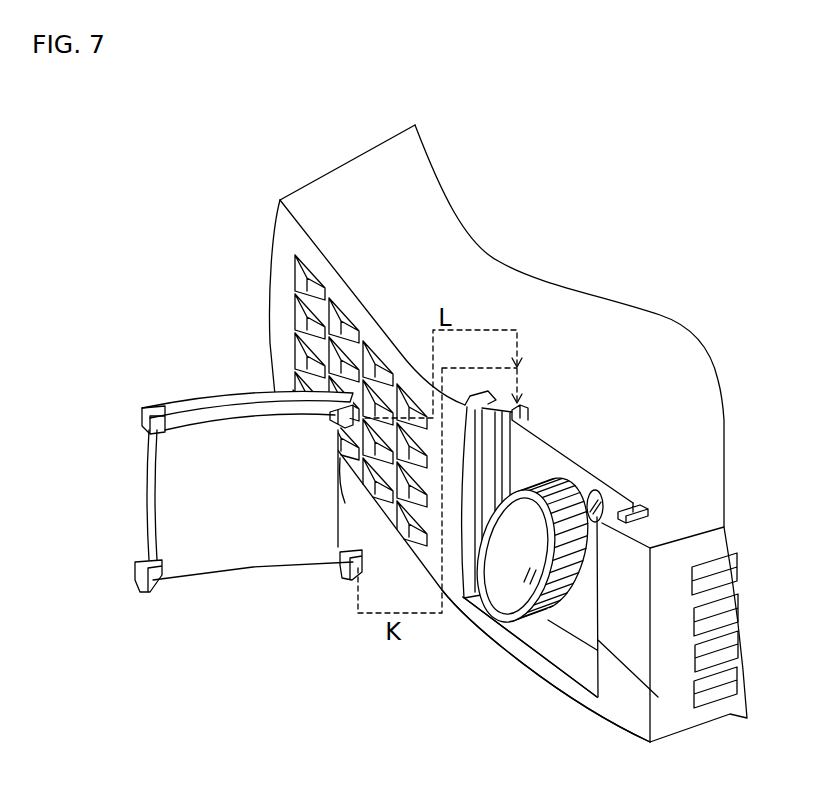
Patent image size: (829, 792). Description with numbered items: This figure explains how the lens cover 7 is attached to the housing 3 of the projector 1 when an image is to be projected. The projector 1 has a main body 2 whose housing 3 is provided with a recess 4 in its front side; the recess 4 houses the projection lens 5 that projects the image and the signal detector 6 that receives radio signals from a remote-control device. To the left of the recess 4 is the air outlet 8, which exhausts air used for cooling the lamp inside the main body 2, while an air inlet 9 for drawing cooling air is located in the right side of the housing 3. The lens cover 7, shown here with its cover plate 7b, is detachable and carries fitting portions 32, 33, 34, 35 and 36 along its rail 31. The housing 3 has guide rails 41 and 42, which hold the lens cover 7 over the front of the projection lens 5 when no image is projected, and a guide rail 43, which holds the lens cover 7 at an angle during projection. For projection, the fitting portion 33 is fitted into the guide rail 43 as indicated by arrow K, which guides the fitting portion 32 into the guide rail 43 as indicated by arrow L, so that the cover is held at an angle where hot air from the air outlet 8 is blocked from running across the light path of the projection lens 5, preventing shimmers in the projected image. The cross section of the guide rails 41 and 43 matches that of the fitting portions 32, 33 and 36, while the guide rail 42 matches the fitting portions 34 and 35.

The projector 1 is at (575, 84).
The main body 2 is at (377, 142).
The housing 3 is at (322, 185).
The recess 4 is at (540, 646).
The projection lens 5 is at (577, 597).
The signal detector 6 is at (588, 488).
The lens cover 7 is at (238, 481).
The cover plate 7b is at (283, 553).
The air outlet 8 is at (307, 275).
The air inlet 9 is at (726, 698).
The upper rail of cover 31 is at (222, 403).
The fitting portion 32 is at (330, 400).
The fitting portion 33 is at (357, 553).
The fitting portion 34 is at (142, 412).
The fitting portion 35 is at (140, 578).
The fitting portion 36 is at (346, 503).
The guide rail 41 is at (475, 395).
The guide rail 42 is at (643, 512).
The guide rail 43 is at (520, 405).